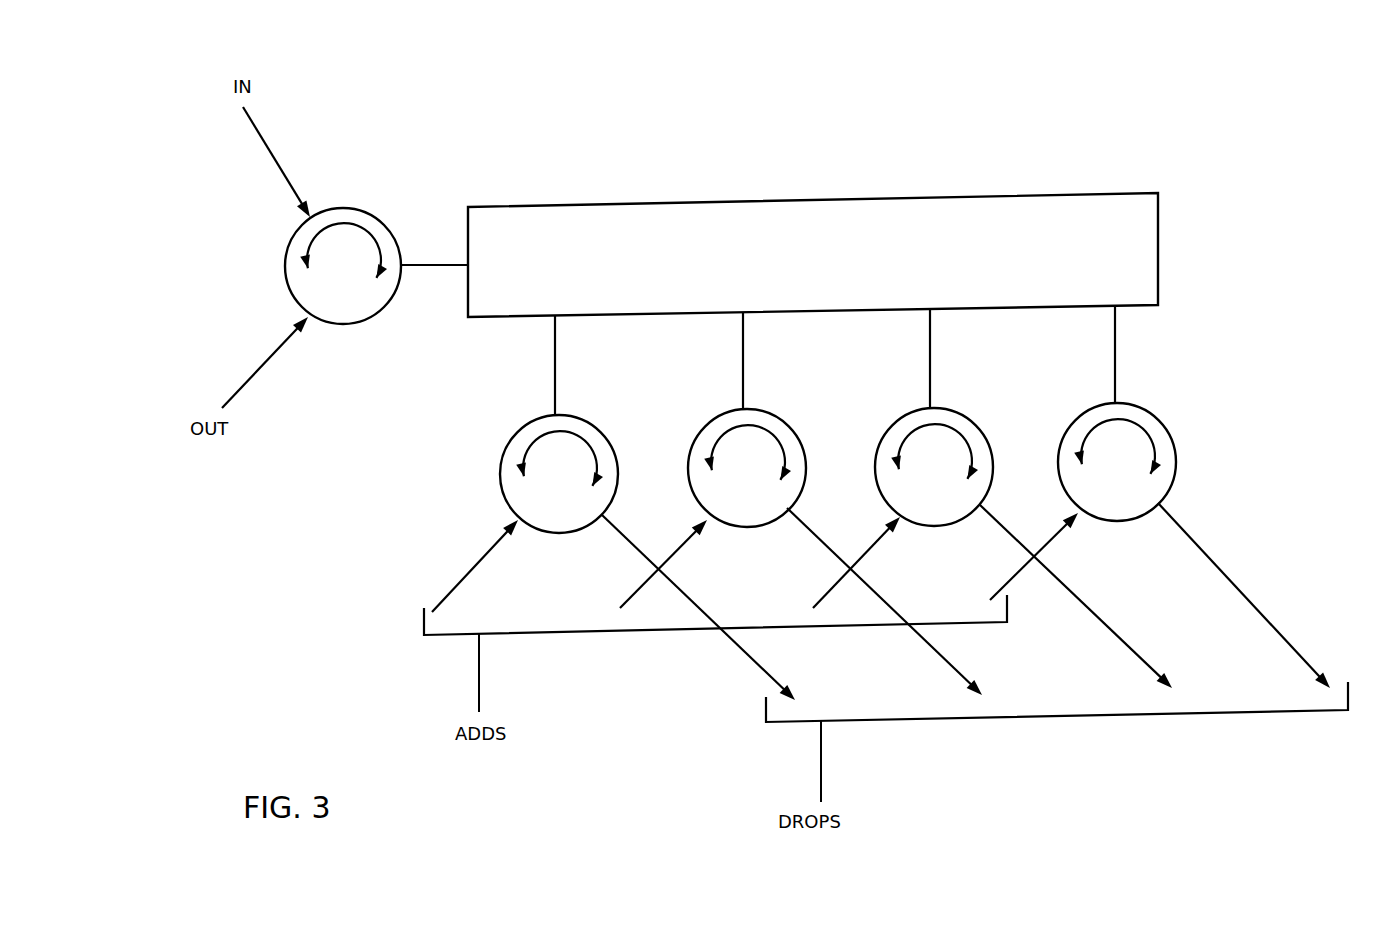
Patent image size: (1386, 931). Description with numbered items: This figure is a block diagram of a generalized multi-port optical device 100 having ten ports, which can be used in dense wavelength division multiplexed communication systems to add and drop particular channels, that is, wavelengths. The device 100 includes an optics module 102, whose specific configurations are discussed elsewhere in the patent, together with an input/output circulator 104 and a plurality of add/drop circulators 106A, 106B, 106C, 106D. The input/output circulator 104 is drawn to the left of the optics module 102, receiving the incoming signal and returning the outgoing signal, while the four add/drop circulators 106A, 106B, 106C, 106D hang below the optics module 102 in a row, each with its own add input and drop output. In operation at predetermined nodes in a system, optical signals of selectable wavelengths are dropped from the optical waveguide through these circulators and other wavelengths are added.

The multi-port optical device 100 is at (1067, 165).
The optics module 102 is at (1158, 248).
The input/output circulator 104 is at (365, 208).
The add/drop circulator 106A is at (517, 428).
The add/drop circulator 106B is at (700, 430).
The add/drop circulator 106C is at (897, 420).
The add/drop circulator 106D is at (1148, 410).